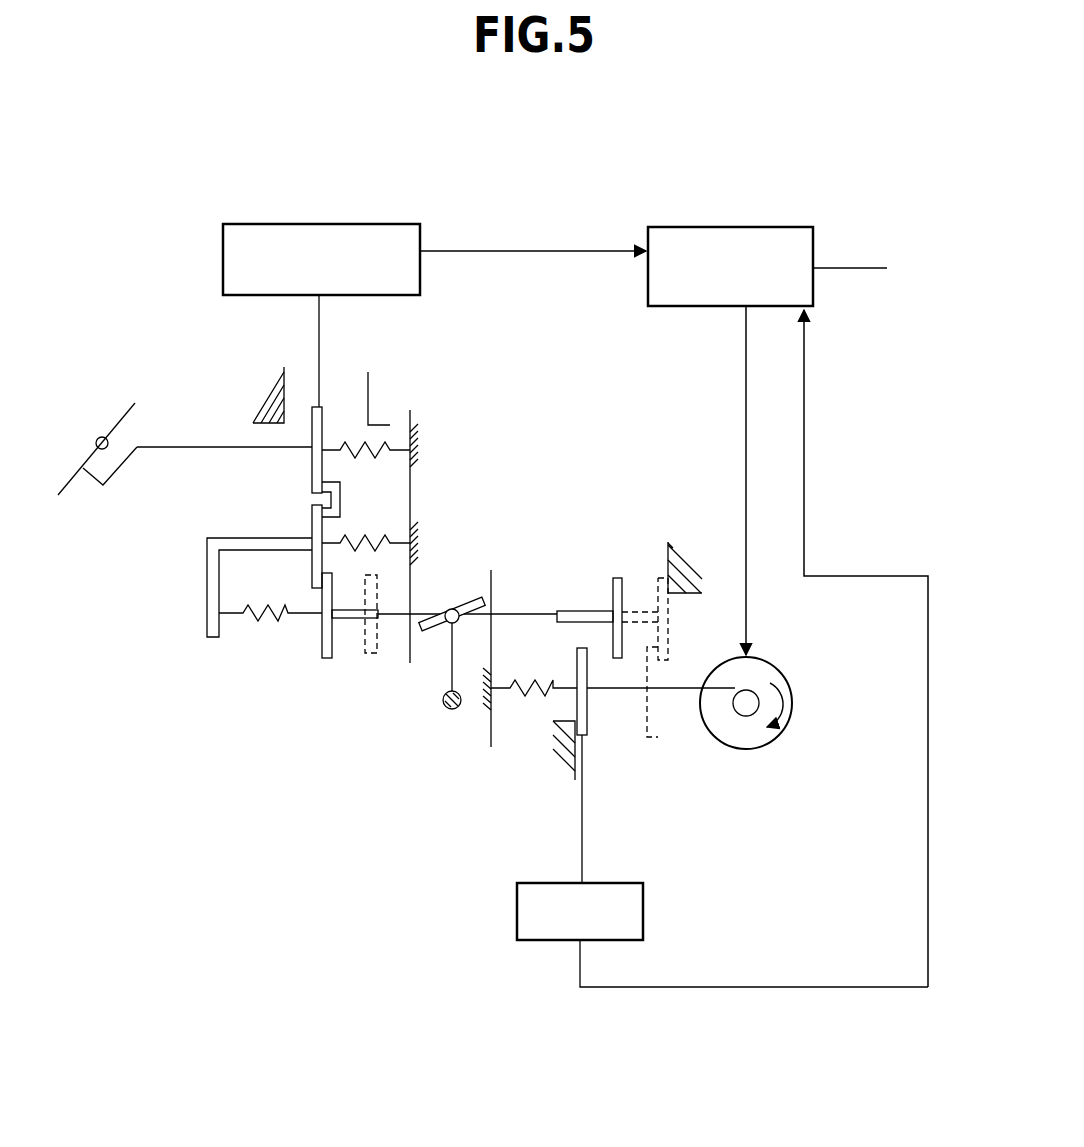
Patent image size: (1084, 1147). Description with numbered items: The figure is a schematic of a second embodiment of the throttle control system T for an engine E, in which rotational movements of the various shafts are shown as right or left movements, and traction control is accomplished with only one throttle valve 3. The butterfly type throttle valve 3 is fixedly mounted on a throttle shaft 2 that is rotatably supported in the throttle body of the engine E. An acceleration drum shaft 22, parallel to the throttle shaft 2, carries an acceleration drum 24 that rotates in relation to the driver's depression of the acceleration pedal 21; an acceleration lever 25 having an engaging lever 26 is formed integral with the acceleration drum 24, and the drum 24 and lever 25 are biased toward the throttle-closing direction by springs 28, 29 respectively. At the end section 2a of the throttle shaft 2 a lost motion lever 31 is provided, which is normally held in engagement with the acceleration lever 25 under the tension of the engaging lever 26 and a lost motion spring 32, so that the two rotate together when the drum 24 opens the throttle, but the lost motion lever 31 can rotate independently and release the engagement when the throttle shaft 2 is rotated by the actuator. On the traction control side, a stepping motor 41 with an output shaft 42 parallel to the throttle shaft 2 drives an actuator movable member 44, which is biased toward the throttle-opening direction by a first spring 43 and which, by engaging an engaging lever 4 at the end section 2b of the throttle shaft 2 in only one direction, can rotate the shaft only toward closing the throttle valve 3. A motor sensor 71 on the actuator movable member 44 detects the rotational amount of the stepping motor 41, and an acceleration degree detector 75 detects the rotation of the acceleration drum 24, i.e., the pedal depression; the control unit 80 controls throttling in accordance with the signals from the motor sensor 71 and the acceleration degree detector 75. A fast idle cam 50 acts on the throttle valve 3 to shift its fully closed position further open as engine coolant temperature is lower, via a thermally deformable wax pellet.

The acceleration degree detector 75 is at (338, 223).
The control unit 80 is at (736, 228).
The motor sensor 71 is at (617, 892).
The acceleration pedal 21 is at (121, 412).
The acceleration drum shaft 22 is at (192, 446).
The acceleration drum 24 is at (325, 425).
The acceleration lever 25 is at (312, 518).
The engaging lever 26 is at (207, 575).
The spring 28 is at (370, 448).
The spring 29 is at (365, 548).
The lost motion lever 31 is at (325, 660).
The lost motion spring 32 is at (268, 623).
The throttle shaft 2 is at (515, 612).
The end section of the throttle shaft 2a is at (397, 616).
The end section of the throttle shaft 2b is at (552, 610).
The throttle valve 3 is at (456, 607).
The engaging lever 4 is at (618, 577).
The stepping motor 41 is at (783, 673).
The output shaft 42 is at (685, 692).
The first spring 43 is at (525, 697).
The actuator movable member 44 is at (583, 737).
The fast idle cam 50 is at (452, 710).
The throttle control system T is at (532, 213).
The engine E is at (495, 504).